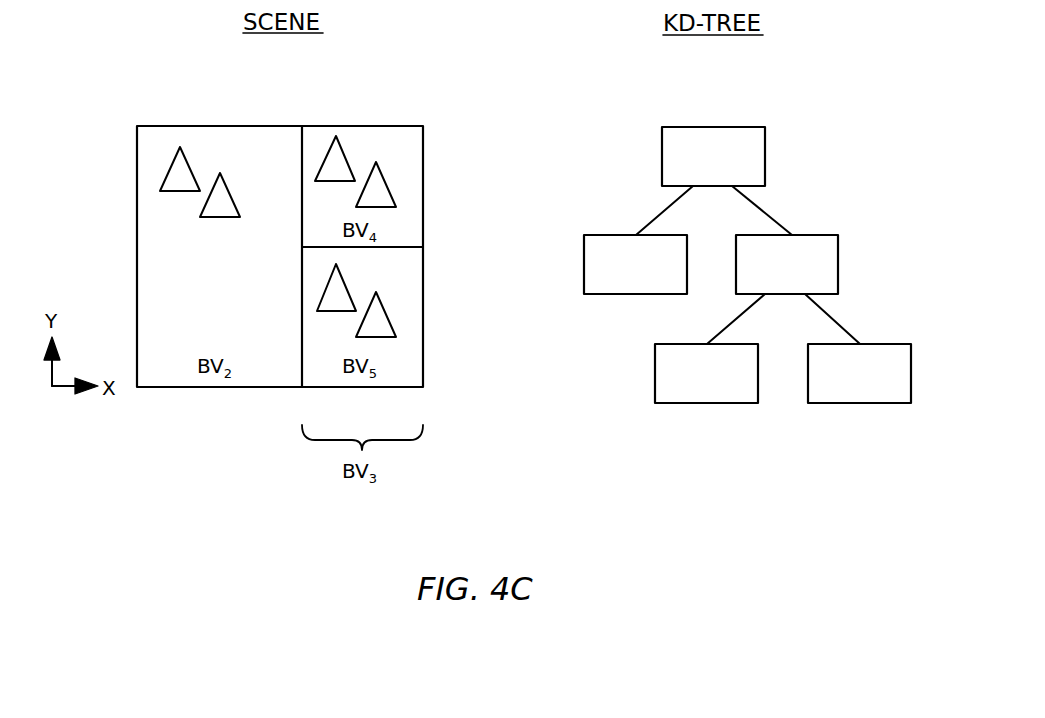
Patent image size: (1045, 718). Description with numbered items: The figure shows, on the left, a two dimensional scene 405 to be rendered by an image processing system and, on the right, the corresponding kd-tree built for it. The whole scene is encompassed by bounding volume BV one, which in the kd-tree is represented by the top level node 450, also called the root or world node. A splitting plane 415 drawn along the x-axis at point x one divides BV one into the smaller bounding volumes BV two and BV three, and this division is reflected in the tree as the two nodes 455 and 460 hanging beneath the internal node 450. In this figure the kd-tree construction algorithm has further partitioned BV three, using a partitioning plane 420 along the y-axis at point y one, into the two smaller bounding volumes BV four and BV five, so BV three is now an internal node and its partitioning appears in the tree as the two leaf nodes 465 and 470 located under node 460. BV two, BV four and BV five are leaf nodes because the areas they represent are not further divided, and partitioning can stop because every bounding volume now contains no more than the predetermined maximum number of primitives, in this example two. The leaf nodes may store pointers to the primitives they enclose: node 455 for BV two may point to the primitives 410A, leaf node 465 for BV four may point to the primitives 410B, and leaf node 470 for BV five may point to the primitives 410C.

The two dimensional scene 405 is at (137, 262).
The primitives 410A is at (150, 199).
The primitives 410B is at (414, 178).
The primitives 410C is at (415, 311).
The splitting plane 415 is at (279, 143).
The second splitting plane Y1 420 is at (410, 225).
The top level node 450 is at (765, 157).
The node 455 is at (584, 265).
The node 460 is at (838, 265).
The leaf node 465 is at (707, 403).
The leaf node 470 is at (858, 403).